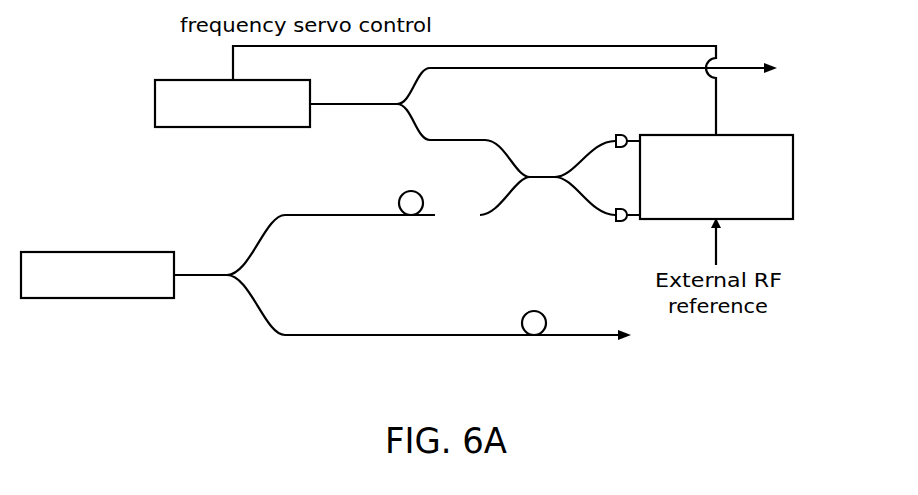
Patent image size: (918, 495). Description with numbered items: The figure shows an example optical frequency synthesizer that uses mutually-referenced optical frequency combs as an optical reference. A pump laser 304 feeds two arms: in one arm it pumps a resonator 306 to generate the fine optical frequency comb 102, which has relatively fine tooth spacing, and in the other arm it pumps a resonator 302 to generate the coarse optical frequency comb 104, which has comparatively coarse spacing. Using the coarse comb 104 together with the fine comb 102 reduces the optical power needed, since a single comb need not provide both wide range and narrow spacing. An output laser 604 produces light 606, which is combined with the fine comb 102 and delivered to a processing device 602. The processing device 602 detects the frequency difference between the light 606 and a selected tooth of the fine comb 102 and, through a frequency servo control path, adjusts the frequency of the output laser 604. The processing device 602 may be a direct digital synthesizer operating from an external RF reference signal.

The fine optical frequency comb 102 is at (446, 218).
The coarse optical frequency comb 104 is at (597, 332).
The resonator 302 is at (535, 310).
The pump laser 304 is at (98, 252).
The resonator 306 is at (412, 191).
The processing device 602 is at (794, 181).
The output laser 604 is at (155, 106).
The light 606 is at (749, 66).